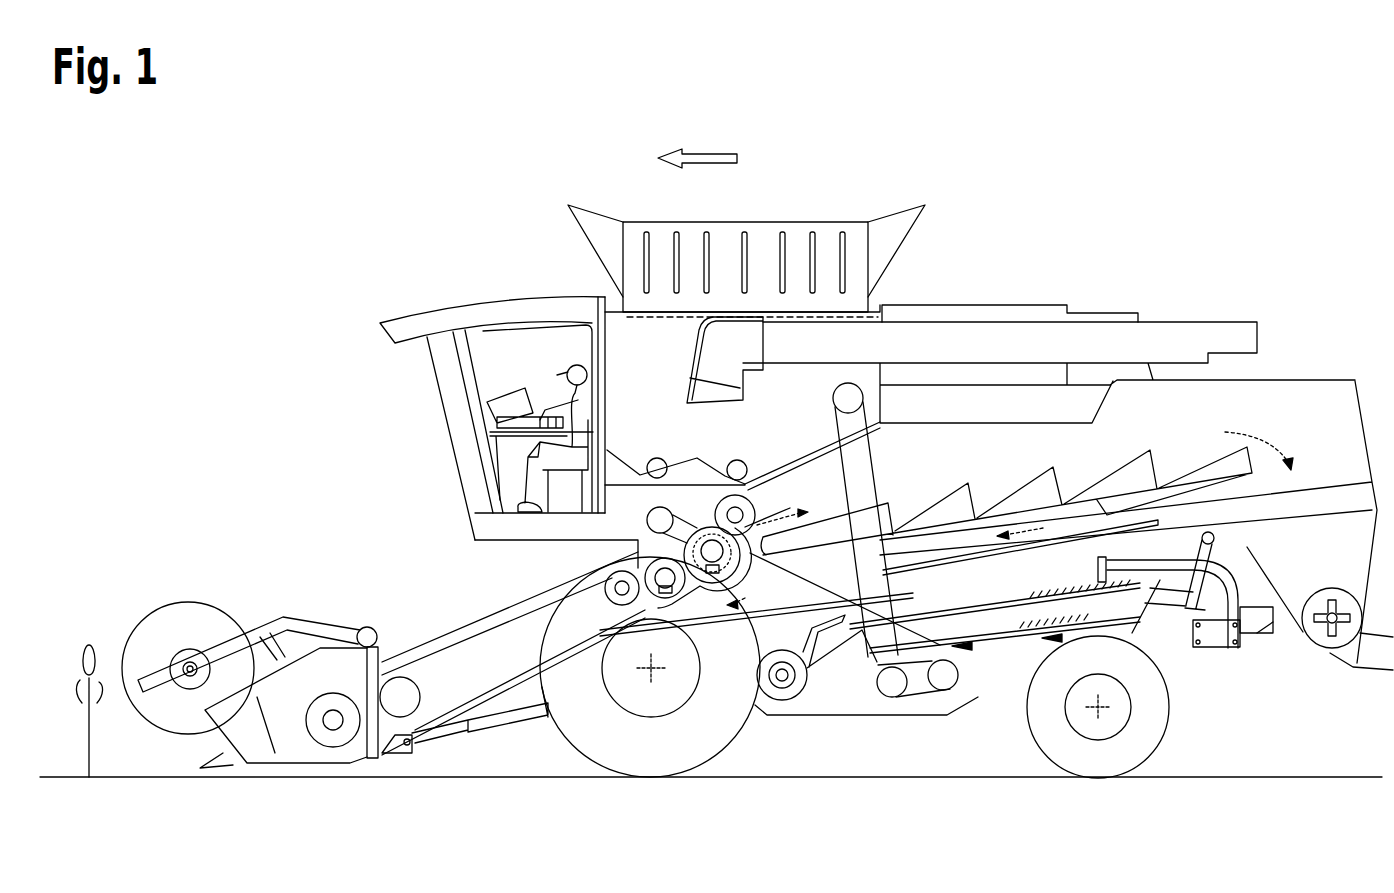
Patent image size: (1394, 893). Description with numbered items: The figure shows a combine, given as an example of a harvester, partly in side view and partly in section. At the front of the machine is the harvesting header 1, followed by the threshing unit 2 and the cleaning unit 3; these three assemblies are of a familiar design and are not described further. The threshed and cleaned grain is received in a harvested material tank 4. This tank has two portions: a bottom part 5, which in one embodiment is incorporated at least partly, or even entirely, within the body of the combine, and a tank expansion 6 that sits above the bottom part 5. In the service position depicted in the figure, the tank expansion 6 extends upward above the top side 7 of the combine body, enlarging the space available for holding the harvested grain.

The harvesting header 1 is at (260, 590).
The threshing unit 2 is at (638, 550).
The cleaning unit 3 is at (1046, 588).
The harvested material tank 4 is at (585, 284).
The bottom part 5 is at (648, 402).
The tank expansion 6 is at (797, 250).
The top side 7 is at (997, 303).